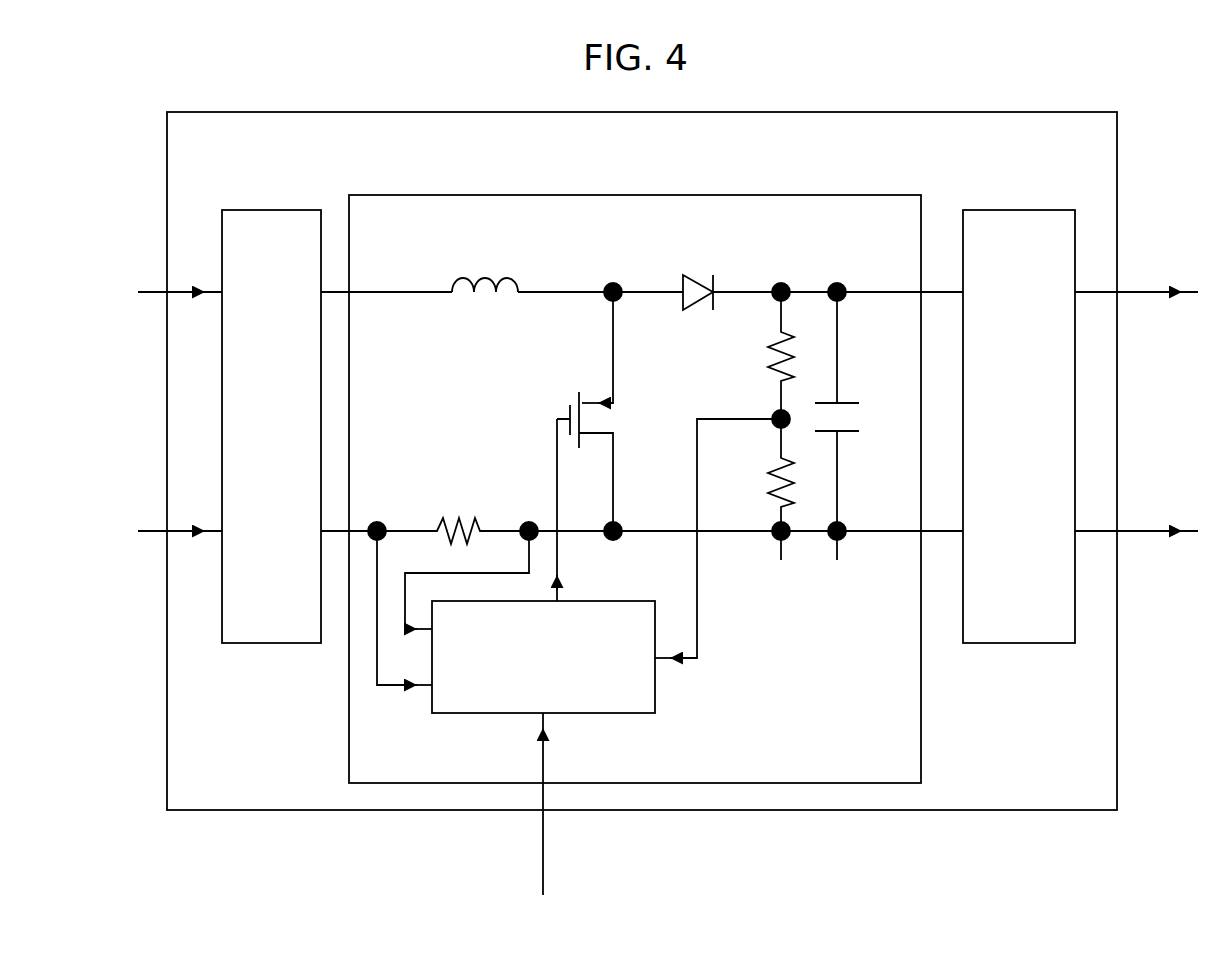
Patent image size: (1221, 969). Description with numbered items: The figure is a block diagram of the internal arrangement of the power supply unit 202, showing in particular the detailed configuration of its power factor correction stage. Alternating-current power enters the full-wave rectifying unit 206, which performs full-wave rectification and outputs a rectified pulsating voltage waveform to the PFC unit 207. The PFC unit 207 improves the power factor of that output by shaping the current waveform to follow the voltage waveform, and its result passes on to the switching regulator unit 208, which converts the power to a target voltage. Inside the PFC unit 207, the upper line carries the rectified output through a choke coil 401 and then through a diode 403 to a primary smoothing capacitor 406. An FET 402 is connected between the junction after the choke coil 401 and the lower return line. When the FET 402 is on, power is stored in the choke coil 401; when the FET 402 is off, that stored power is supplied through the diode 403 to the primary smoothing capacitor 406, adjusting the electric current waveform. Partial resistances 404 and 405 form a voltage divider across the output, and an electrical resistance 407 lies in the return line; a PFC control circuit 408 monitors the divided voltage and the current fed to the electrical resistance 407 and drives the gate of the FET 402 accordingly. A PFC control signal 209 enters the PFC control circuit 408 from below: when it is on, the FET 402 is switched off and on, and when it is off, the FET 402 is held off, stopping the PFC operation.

The power supply unit 202 is at (1118, 141).
The full-wave rectifying unit 206 is at (270, 210).
The PFC unit 207 is at (857, 195).
The switching regulator unit 208 is at (1015, 210).
The PFC control signal 209 is at (543, 862).
The choke coil 401 is at (482, 262).
The FET 402 is at (573, 391).
The diode 403 is at (683, 305).
The partial resistance 404 is at (762, 362).
The partial resistance 405 is at (762, 480).
The primary smoothing capacitor 406 is at (852, 394).
The electrical resistance 407 is at (455, 513).
The PFC control circuit 408 is at (620, 713).